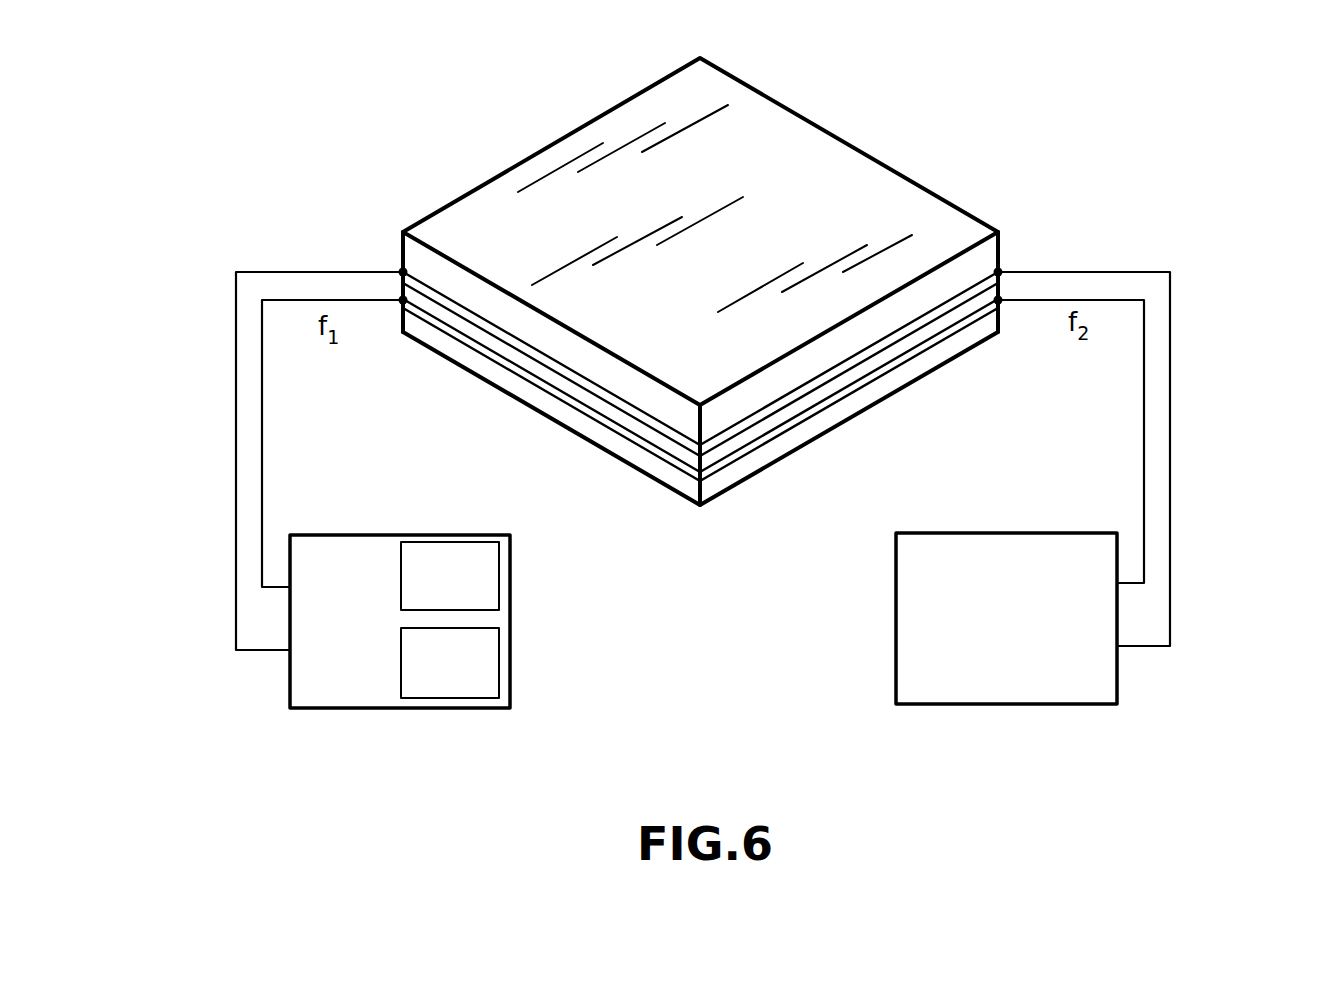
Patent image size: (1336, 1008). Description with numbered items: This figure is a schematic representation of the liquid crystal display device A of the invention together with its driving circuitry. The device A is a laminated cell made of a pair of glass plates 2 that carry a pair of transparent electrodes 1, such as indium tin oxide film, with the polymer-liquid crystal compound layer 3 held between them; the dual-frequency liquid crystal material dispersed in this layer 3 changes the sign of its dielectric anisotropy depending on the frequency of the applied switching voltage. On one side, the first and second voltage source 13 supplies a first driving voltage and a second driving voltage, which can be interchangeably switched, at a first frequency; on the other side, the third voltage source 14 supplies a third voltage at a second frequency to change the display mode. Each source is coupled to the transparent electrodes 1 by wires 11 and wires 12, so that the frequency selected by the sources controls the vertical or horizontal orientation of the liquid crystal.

The liquid crystal display device A is at (764, 281).
The transparent electrode 1 is at (996, 271).
The glass plate 2 is at (998, 235).
The polymer-liquid crystal compound layer 3 is at (1000, 285).
The wires 11 is at (262, 388).
The wires 12 is at (1145, 383).
The first and second voltage source 13 is at (380, 708).
The third voltage source 14 is at (1012, 704).